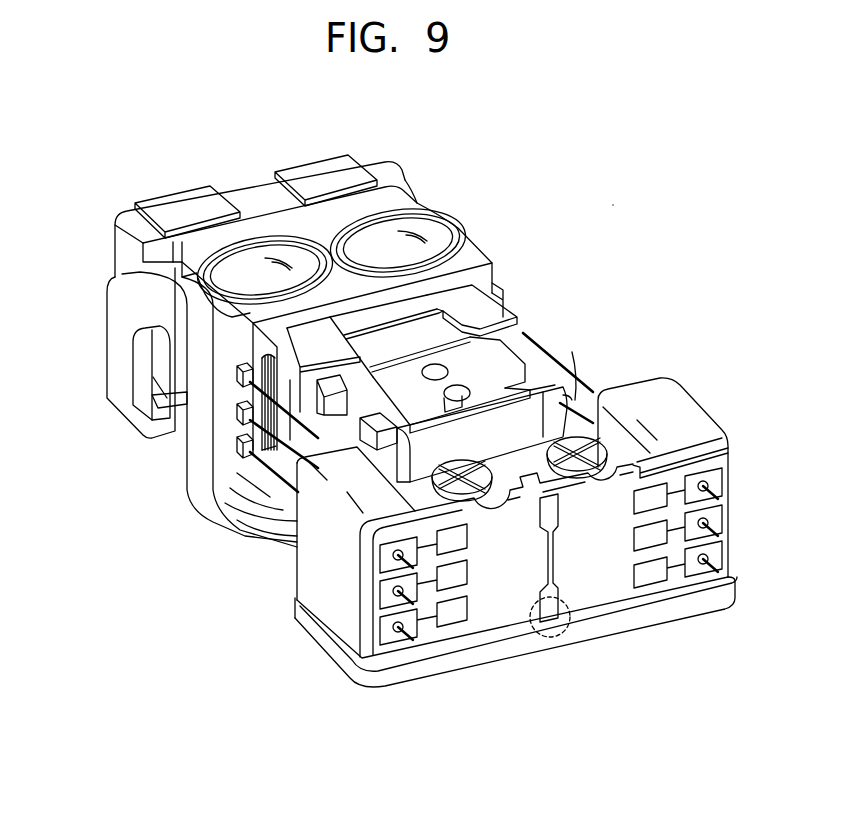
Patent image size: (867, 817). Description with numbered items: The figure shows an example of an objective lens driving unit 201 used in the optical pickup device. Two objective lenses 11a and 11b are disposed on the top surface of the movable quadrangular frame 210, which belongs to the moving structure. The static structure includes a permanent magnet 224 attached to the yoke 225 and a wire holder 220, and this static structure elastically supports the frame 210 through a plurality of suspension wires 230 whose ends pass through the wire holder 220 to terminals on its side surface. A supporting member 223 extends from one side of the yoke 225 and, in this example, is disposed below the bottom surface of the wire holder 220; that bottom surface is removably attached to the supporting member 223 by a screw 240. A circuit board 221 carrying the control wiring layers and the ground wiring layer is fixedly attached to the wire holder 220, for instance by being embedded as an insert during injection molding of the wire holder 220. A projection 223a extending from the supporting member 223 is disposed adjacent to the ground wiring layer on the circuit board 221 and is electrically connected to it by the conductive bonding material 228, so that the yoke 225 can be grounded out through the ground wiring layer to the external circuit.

The objective lens driving unit 201 is at (611, 207).
The frame 210 is at (482, 258).
The objective lens 11a is at (377, 230).
The objective lens 11b is at (258, 253).
The permanent magnet 224 is at (157, 370).
The suspension wires 230 is at (277, 503).
The yoke 225 is at (244, 552).
The screw 240 is at (598, 452).
The wire holder 220 is at (678, 413).
The circuit board 221 is at (602, 592).
The conductive bonding material 228 is at (553, 640).
The supporting member 223 is at (325, 655).
The projection 223a is at (467, 663).